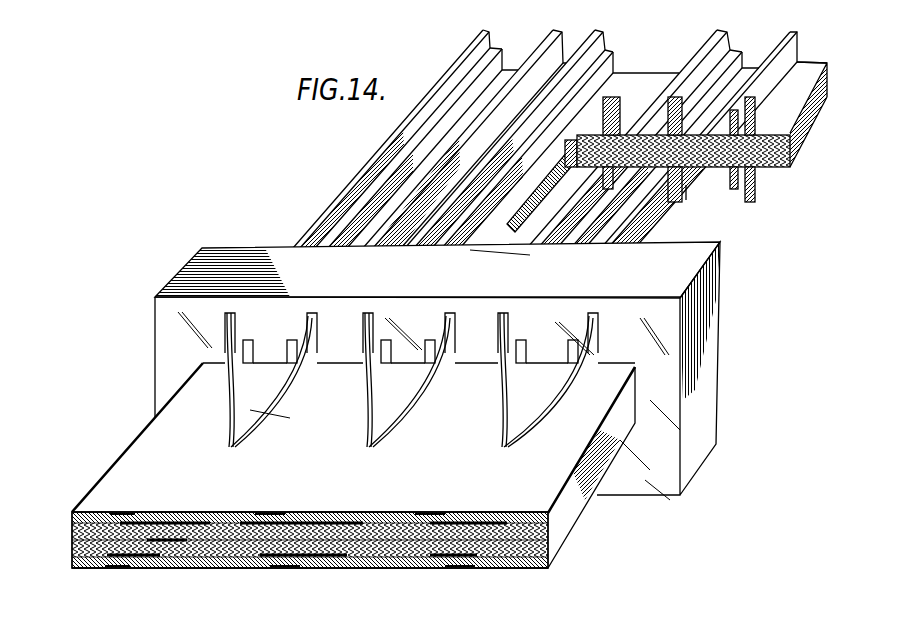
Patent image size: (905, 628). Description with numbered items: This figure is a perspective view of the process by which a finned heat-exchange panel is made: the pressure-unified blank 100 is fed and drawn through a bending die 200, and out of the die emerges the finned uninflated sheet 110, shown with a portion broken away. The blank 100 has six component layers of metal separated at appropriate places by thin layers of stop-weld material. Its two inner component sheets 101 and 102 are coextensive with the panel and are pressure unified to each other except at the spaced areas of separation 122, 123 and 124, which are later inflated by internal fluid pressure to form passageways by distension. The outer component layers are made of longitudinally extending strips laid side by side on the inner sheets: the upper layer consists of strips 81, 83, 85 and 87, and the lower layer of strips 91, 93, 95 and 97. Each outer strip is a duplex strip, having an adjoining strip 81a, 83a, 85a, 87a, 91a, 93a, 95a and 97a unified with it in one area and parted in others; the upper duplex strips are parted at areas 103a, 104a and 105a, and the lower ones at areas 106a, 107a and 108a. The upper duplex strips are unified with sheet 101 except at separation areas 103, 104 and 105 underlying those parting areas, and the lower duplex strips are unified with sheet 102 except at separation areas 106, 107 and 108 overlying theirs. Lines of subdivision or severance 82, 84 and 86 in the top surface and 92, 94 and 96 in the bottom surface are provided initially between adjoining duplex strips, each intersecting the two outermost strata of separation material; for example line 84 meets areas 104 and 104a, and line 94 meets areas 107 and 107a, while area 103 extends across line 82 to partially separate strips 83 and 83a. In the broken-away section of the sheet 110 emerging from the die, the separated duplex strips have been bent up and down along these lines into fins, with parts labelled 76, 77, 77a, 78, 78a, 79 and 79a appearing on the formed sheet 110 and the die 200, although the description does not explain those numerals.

The connector body 76 is at (430, 4).
The contact 77 is at (610, 190).
The contact 77a is at (668, 193).
The rail 78 is at (501, 47).
The rail 78a is at (463, 52).
The rail 79 is at (647, 45).
The end rail 79a is at (797, 58).
The outer layer strip 81 is at (203, 413).
The adjoining layer 81a is at (82, 522).
The line of separation 82 is at (225, 448).
The outer layer strip 83 is at (322, 415).
The adjoining strip 83a is at (229, 513).
The line of subdivision 84 is at (370, 448).
The outer layer strip 85 is at (462, 415).
The adjoining strip 85a is at (388, 513).
The line of subdivision 86 is at (500, 460).
The outer layer strip 87 is at (577, 428).
The adjoining strip 87a is at (517, 513).
The outer layer strip 91 is at (93, 568).
The adjoining strip 91a is at (76, 567).
The line of subdivision 92 is at (163, 568).
The outer layer strip 93 is at (238, 568).
The adjoining strip 93a is at (218, 568).
The line of subdivision 94 is at (316, 568).
The outer layer strip 95 is at (392, 570).
The adjoining strip 95a is at (392, 568).
The line of subdivision 96 is at (488, 568).
The outer layer strip 97 is at (517, 568).
The adjoining strip 97a is at (538, 568).
The blank 100 is at (556, 532).
The inner component sheet 101 is at (80, 524).
The inner component sheet 102 is at (80, 543).
The separation area 103 is at (146, 523).
The separation area 103a is at (122, 512).
The separation area 104 is at (293, 523).
The separation area 104a is at (268, 513).
The separation area 105 is at (449, 523).
The separation area 105a is at (428, 513).
The separation area 106 is at (140, 556).
The separation area 106a is at (117, 570).
The separation area 107 is at (270, 556).
The separation area 107a is at (284, 568).
The separation area 108 is at (450, 558).
The separation area 108a is at (460, 568).
The finned uninflated sheet 110 is at (397, 127).
The area of separation 122 is at (166, 540).
The area of separation 123 is at (585, 170).
The area of separation 124 is at (690, 202).
The bending die 200 is at (706, 355).